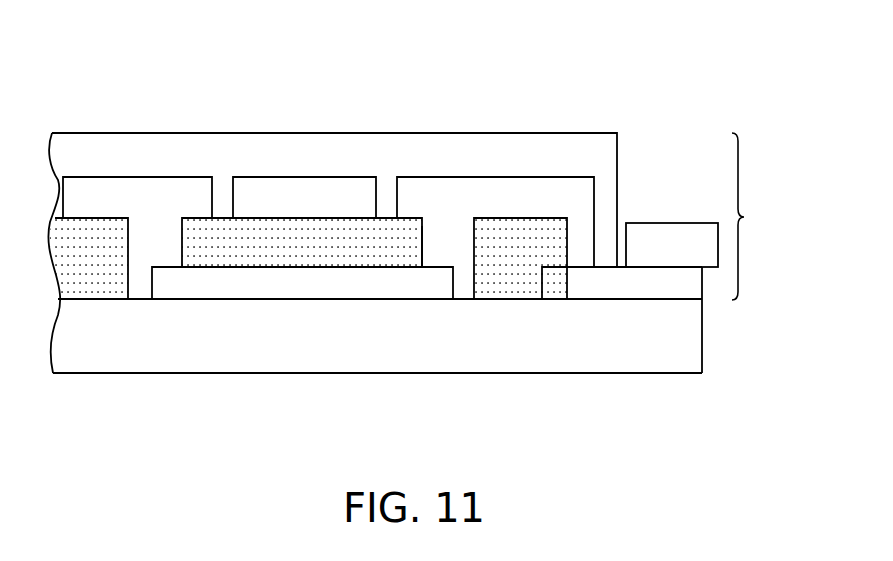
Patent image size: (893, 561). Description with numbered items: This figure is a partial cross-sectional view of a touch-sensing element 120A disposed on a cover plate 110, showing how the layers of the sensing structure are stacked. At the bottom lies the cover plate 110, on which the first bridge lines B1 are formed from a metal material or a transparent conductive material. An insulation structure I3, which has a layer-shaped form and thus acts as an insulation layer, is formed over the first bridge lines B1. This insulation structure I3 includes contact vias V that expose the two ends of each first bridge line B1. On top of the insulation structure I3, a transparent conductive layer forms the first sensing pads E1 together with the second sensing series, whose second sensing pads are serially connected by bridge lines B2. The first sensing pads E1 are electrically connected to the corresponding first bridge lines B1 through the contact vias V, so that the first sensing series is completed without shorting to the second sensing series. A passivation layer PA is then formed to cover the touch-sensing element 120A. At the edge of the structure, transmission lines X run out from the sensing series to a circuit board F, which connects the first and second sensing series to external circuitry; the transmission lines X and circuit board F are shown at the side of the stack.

The cover plate 110 is at (690, 348).
The touch-sensing element 120A is at (766, 216).
The first sensing pads E1 is at (102, 192).
The first bridge lines B1 is at (278, 283).
The bridge lines B2 is at (327, 192).
The insulation structure I3 is at (386, 234).
The contact vias V is at (433, 251).
The passivation layer PA is at (592, 153).
The transmission lines X is at (607, 283).
The circuit board F is at (672, 235).